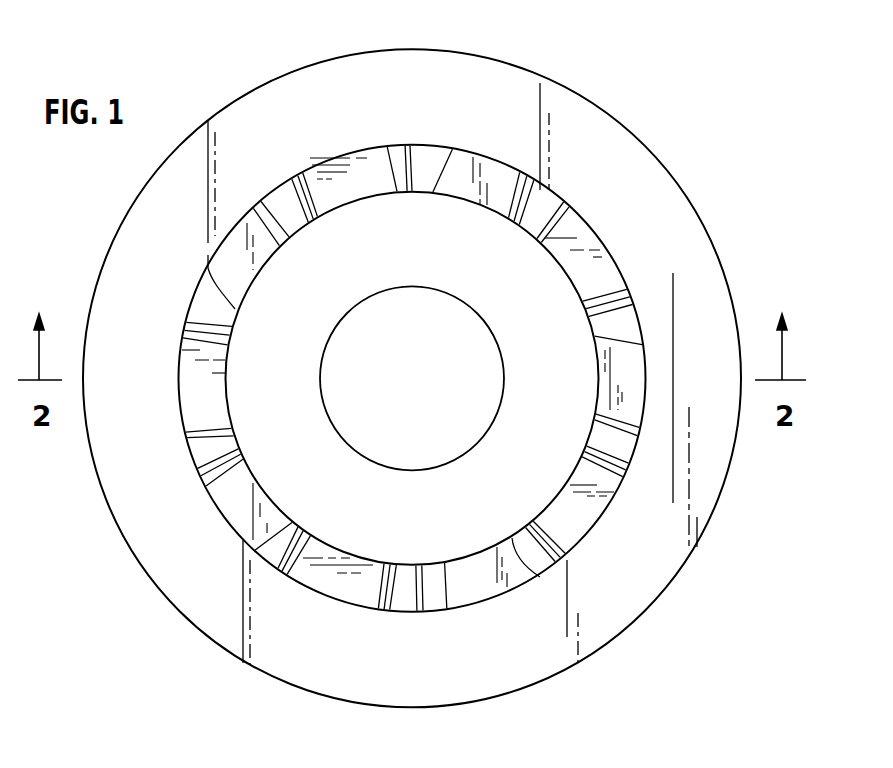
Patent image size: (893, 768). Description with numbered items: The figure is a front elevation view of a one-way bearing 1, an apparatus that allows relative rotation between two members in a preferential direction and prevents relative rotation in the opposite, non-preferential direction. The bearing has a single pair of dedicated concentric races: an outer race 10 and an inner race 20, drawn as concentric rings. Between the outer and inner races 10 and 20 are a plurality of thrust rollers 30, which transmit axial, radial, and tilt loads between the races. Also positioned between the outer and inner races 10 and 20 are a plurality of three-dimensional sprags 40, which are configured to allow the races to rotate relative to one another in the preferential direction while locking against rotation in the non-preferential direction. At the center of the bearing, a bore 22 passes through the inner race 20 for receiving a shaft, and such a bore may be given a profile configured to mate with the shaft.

The one-way bearing 1 is at (563, 70).
The outer race 10 is at (662, 164).
The inner race 20 is at (535, 574).
The bore 22 is at (478, 313).
The thrust rollers 30 is at (610, 478).
The three-dimensional sprags 40 is at (620, 336).